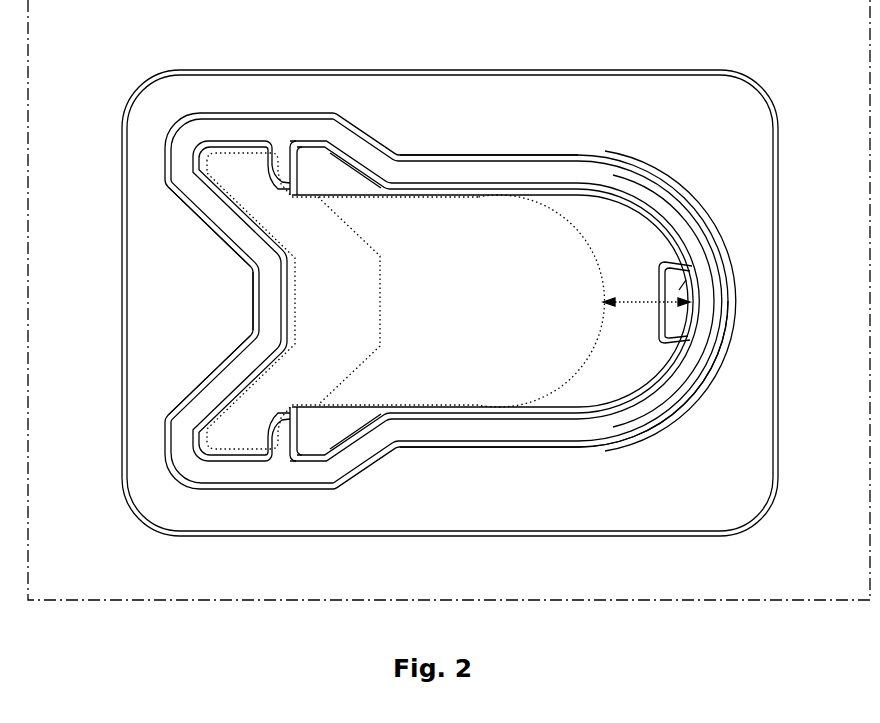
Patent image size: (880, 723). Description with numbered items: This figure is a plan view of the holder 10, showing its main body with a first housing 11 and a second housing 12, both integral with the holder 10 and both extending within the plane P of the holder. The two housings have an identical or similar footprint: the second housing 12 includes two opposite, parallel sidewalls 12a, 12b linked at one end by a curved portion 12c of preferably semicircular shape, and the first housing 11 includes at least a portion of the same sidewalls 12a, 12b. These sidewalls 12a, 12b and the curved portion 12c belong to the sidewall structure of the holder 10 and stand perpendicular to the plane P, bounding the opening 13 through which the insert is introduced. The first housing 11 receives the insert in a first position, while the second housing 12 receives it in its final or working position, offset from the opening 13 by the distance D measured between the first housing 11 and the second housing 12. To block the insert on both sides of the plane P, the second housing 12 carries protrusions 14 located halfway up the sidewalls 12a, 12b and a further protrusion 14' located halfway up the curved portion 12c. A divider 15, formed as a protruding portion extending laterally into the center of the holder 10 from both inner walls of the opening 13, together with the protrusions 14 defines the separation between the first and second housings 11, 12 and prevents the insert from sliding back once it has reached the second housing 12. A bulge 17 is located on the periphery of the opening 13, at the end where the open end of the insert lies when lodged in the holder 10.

The holder 10 is at (707, 507).
The first housing 11 is at (298, 298).
The second housing 12 is at (365, 245).
The sidewall 12a is at (472, 197).
The sidewall 12b is at (463, 402).
The curved portion 12c is at (657, 365).
The opening 13 is at (428, 320).
The protrusions 14 is at (320, 303).
The protrusion 14' is at (743, 294).
The divider 15 is at (273, 170).
The bulge 17 is at (225, 293).
The distance D is at (646, 289).
The plane P is at (97, 590).